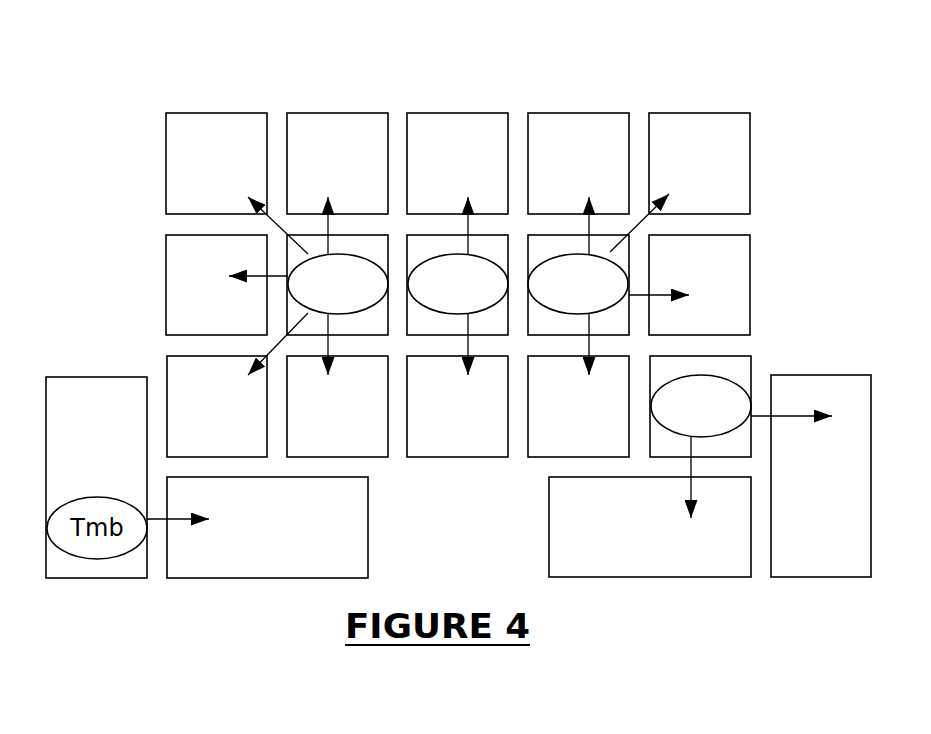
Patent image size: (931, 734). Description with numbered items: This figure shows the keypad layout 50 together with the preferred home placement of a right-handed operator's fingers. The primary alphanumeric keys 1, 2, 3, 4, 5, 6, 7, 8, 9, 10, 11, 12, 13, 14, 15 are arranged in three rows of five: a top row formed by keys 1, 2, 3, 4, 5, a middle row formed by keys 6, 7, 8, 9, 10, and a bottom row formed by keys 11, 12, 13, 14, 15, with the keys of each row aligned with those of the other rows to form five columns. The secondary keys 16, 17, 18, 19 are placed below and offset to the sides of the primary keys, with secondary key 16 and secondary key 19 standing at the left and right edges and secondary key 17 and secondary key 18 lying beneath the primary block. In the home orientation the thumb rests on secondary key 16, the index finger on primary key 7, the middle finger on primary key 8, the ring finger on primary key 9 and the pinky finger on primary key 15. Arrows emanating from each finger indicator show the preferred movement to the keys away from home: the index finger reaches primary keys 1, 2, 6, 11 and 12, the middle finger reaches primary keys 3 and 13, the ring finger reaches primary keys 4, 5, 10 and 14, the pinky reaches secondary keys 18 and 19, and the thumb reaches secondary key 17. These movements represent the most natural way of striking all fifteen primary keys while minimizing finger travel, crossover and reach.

The primary alphanumeric key 1 is at (198, 152).
The primary alphanumeric key 2 is at (319, 152).
The primary alphanumeric key 3 is at (439, 152).
The primary alphanumeric key 4 is at (560, 152).
The primary alphanumeric key 5 is at (681, 152).
The primary alphanumeric key 6 is at (197, 276).
The primary alphanumeric key 7 is at (298, 256).
The primary alphanumeric key 8 is at (445, 253).
The primary alphanumeric key 9 is at (548, 254).
The primary alphanumeric key 10 is at (697, 272).
The primary alphanumeric key 11 is at (212, 427).
The primary alphanumeric key 12 is at (332, 430).
The primary alphanumeric key 13 is at (453, 430).
The primary alphanumeric key 14 is at (574, 423).
The primary alphanumeric key 15 is at (730, 375).
The secondary key 16 is at (91, 413).
The secondary key 17 is at (292, 545).
The secondary key 18 is at (594, 544).
The secondary key 19 is at (817, 506).
The keyboard layout 50 is at (188, 618).